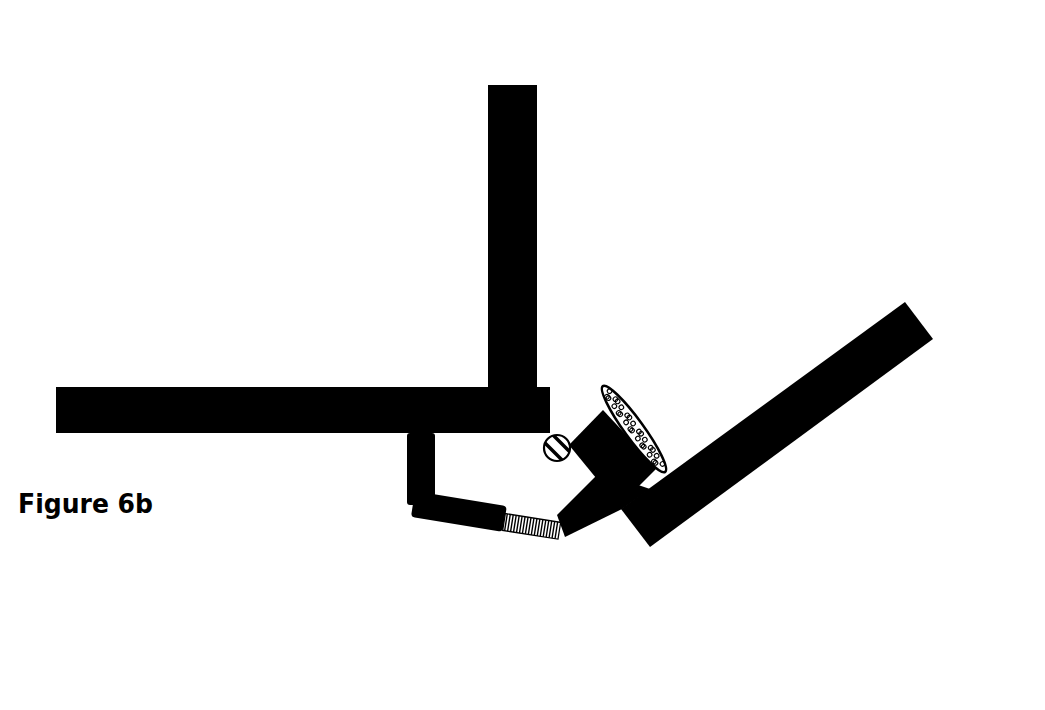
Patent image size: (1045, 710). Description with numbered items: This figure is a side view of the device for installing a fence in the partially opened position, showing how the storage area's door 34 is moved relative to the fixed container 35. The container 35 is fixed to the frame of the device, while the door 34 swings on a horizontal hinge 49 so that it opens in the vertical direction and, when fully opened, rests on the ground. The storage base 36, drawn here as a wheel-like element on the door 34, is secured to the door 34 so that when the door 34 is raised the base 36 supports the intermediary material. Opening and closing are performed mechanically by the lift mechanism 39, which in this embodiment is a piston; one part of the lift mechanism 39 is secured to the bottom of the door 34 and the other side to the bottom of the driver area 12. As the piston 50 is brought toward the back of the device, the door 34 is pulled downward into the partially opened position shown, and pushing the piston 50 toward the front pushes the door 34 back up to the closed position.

The driver area 12 is at (242, 270).
The door 34 is at (856, 318).
The container 35 is at (486, 133).
The storage base 36 is at (647, 428).
The lift mechanism 39 is at (402, 515).
The horizontal hinge 49 is at (558, 427).
The piston 50 is at (561, 543).